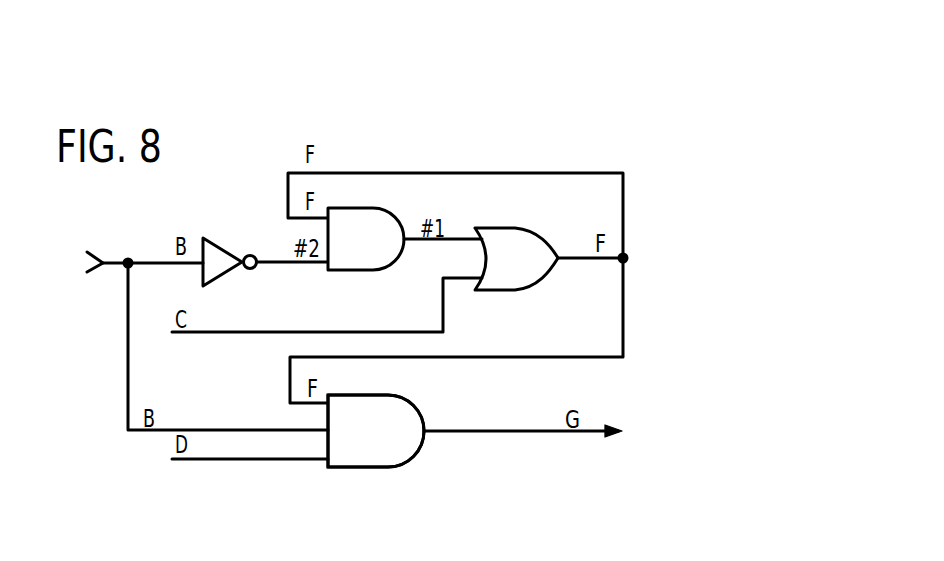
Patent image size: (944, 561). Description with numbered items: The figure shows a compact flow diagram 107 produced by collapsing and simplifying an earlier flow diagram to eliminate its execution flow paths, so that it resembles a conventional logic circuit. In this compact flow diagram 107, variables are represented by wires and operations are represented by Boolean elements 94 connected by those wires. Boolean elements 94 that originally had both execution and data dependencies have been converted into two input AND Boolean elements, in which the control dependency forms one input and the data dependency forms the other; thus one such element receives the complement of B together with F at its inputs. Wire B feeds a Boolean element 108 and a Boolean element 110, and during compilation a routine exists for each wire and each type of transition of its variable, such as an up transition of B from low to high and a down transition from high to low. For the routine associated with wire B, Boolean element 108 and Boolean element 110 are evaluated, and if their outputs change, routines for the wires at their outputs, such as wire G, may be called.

The Boolean element 94 is at (352, 270).
The compact flow diagram 107 is at (645, 208).
The Boolean element 108 is at (220, 246).
The Boolean element 110 is at (376, 395).